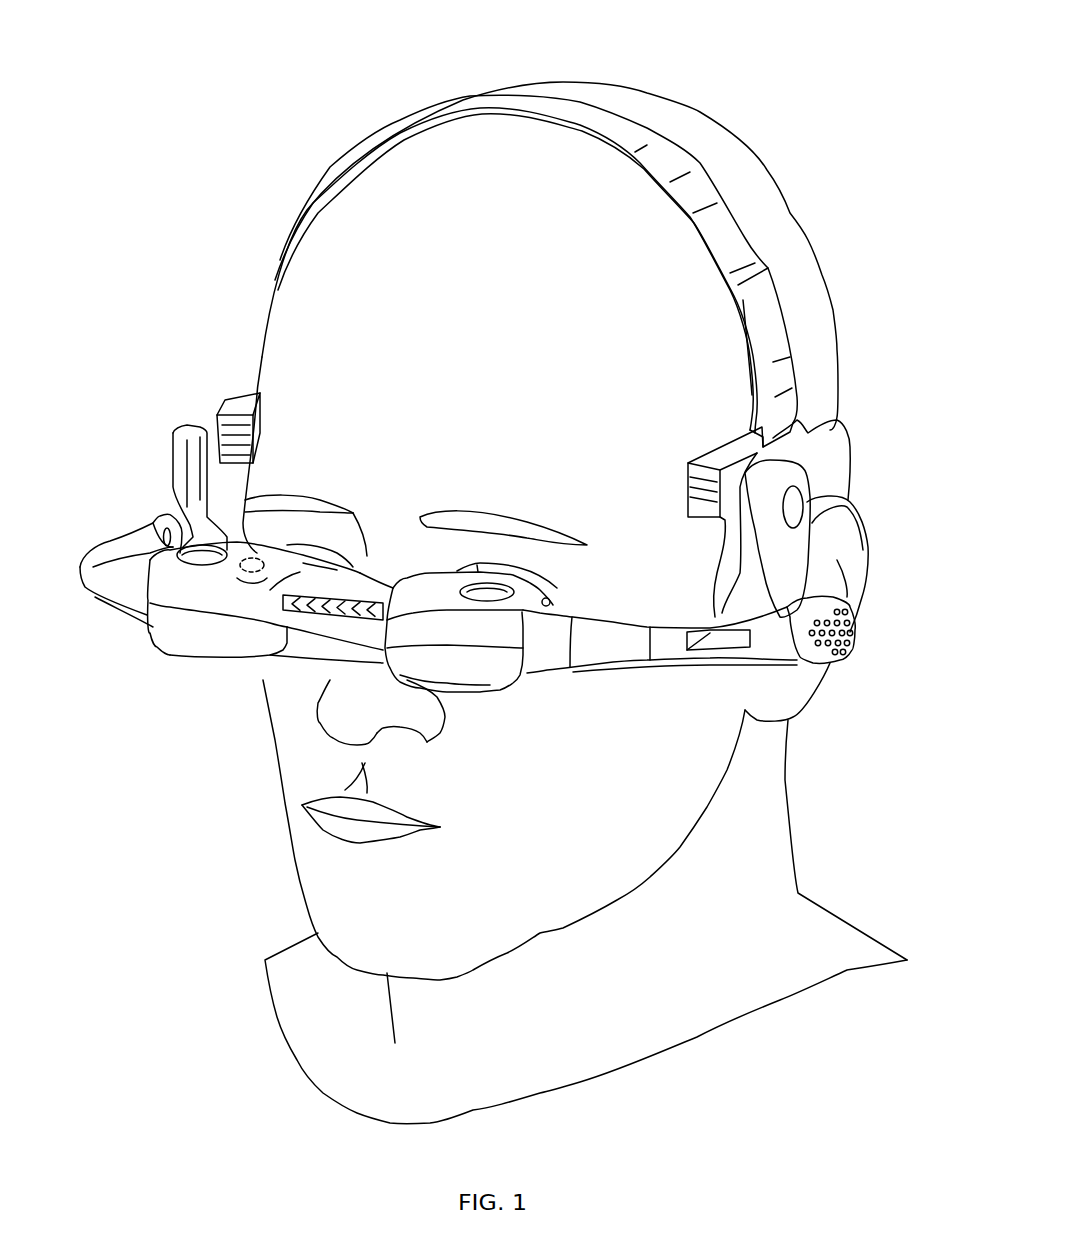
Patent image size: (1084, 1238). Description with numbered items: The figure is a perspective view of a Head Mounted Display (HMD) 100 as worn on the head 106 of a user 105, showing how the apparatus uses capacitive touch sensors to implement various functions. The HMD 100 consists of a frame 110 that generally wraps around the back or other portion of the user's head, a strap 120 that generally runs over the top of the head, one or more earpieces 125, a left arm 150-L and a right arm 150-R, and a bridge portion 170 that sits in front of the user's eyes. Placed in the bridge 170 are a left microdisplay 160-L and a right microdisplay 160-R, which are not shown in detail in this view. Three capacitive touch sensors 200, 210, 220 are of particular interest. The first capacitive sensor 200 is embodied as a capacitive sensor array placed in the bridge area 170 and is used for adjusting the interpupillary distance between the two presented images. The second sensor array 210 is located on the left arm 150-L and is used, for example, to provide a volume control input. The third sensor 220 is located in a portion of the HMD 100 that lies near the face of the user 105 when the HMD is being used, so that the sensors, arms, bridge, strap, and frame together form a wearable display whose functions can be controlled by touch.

The Head Mounted Display (HMD) 100 is at (323, 62).
The user 105 is at (762, 883).
The head of user 106 is at (508, 258).
The frame 110 is at (828, 440).
The strap 120 is at (720, 217).
The earpiece 125 is at (795, 567).
The right arm 150-R is at (97, 594).
The left arm 150-L is at (607, 663).
The right microdisplay 160-R is at (200, 650).
The left microdisplay 160-L is at (482, 683).
The bridge portion 170 is at (307, 647).
The first capacitive sensor array 200 is at (365, 590).
The second sensor array 210 is at (697, 630).
The third sensor 220 is at (263, 555).